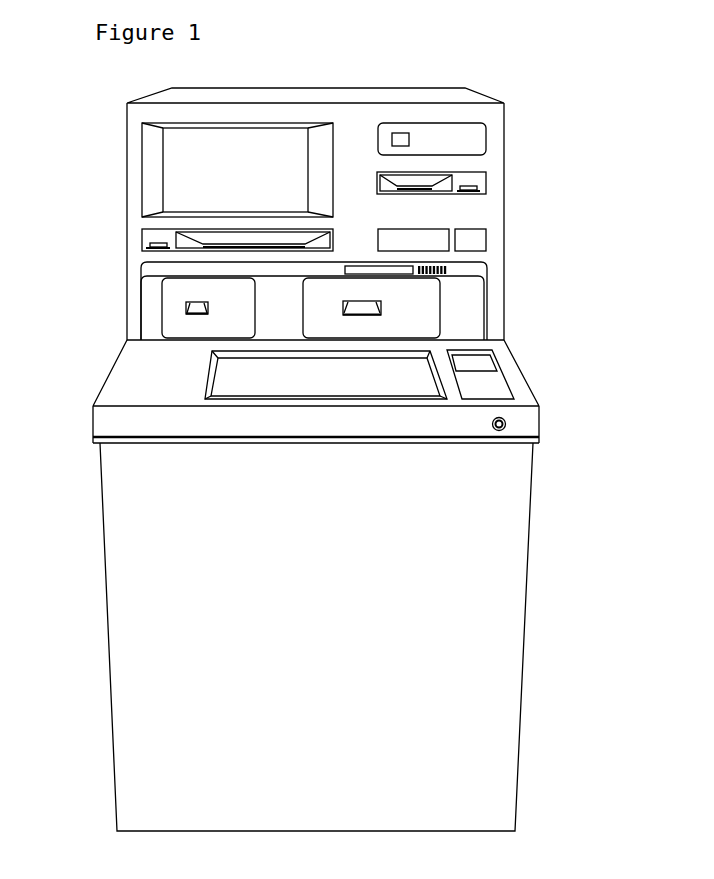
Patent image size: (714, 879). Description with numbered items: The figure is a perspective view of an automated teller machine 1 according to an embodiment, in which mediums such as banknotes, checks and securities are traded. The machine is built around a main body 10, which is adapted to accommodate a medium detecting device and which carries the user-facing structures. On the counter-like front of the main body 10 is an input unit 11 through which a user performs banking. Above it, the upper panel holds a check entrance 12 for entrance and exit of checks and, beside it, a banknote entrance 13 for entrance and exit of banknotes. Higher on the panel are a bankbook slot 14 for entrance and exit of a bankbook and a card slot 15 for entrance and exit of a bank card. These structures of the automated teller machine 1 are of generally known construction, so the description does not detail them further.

The automated teller machine 1 is at (92, 261).
The main body 10 is at (518, 592).
The input unit 11 is at (423, 379).
The check entrance 12 is at (170, 312).
The banknote entrance 13 is at (427, 310).
The bankbook slot 14 is at (215, 240).
The card slot 15 is at (441, 186).